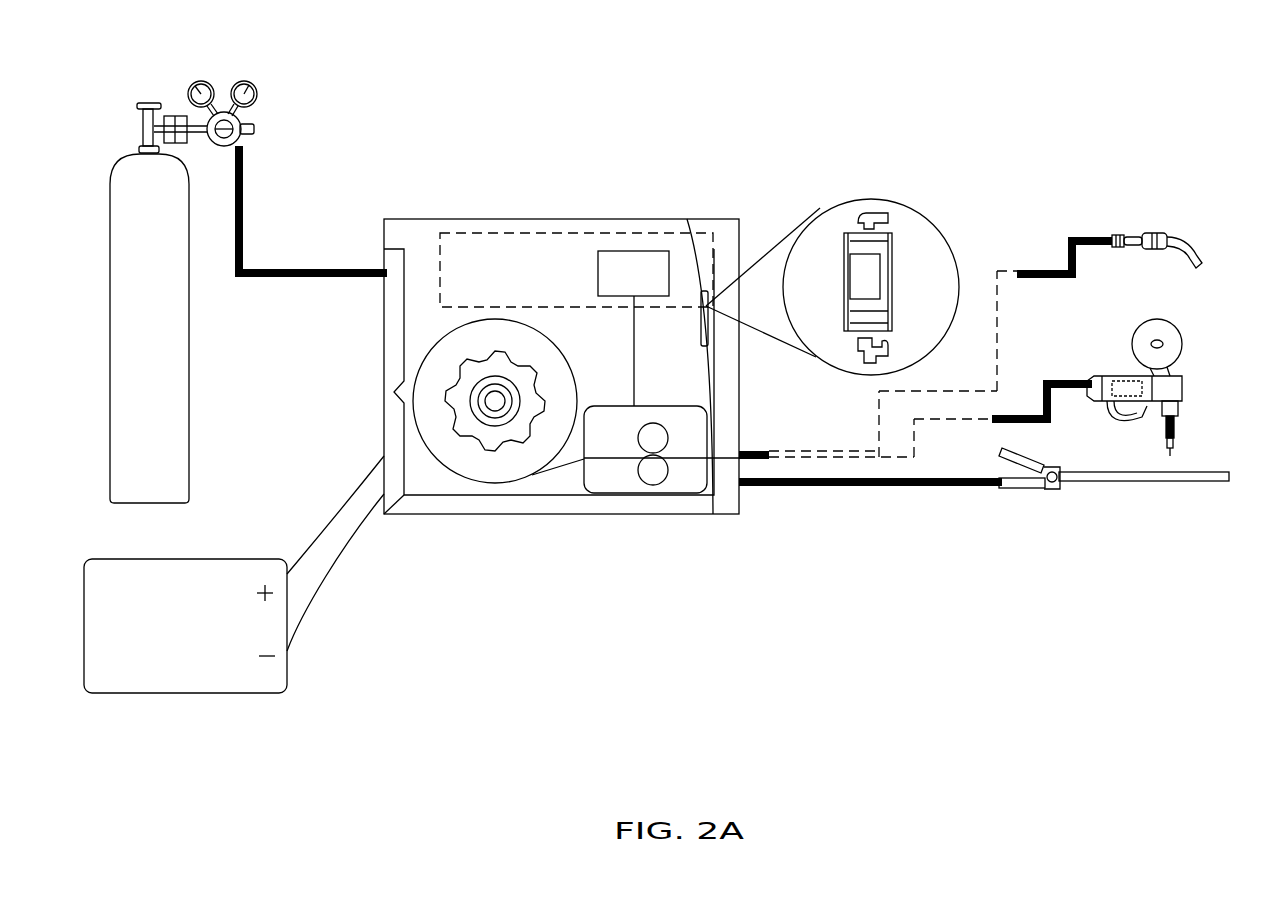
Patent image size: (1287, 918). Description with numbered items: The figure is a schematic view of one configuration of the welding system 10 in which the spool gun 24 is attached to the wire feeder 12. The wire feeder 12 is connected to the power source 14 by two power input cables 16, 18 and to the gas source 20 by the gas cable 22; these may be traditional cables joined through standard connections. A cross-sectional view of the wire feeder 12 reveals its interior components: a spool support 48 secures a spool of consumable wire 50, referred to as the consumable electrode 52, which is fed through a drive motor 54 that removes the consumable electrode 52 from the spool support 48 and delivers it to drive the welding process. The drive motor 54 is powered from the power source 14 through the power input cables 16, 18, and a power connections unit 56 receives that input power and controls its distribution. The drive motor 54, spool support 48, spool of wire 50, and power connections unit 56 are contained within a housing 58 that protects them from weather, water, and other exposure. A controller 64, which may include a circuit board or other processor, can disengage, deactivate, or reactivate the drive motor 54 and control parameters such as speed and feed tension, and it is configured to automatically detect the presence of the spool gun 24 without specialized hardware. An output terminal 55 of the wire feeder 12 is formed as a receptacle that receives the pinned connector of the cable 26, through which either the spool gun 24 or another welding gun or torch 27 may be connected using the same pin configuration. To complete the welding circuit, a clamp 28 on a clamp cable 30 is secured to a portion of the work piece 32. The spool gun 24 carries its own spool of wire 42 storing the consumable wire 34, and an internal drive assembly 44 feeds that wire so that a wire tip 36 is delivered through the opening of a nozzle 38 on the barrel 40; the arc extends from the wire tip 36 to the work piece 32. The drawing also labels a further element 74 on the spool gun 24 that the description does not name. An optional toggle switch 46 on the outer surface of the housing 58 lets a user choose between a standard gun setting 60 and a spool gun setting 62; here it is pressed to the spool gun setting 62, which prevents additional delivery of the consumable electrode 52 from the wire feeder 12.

The welding system 10 is at (982, 116).
The wire feeder 12 is at (700, 514).
The power source 14 is at (83, 582).
The power input cable 16 is at (304, 546).
The power input cable 18 is at (337, 565).
The gas source 20 is at (108, 301).
The gas cable 22 is at (240, 220).
The spool gun 24 is at (1254, 366).
The cable 26 is at (1068, 257).
The welding gun or torch 27 is at (1169, 237).
The clamp 28 is at (1022, 488).
The clamp cable 30 is at (860, 487).
The work piece 32 is at (1148, 481).
The consumable wire 34 is at (1167, 446).
The wire tip 36 is at (1172, 445).
The nozzle 38 is at (1173, 435).
The barrel 40 is at (1176, 415).
The spool of wire 42 is at (1180, 336).
The drive assembly 44 is at (1118, 380).
The toggle switch 46 is at (895, 238).
The spool support 48 is at (486, 425).
The spool of wire 50 is at (442, 466).
The consumable electrode 52 is at (553, 470).
The drive motor 54 is at (640, 494).
The output terminal 55 is at (757, 430).
The power connections unit 56 is at (438, 270).
The housing 58 is at (686, 218).
The standard gun setting 60 is at (871, 210).
The spool gun setting 62 is at (876, 358).
The controller 64 is at (613, 250).
The trigger 74 is at (1132, 419).